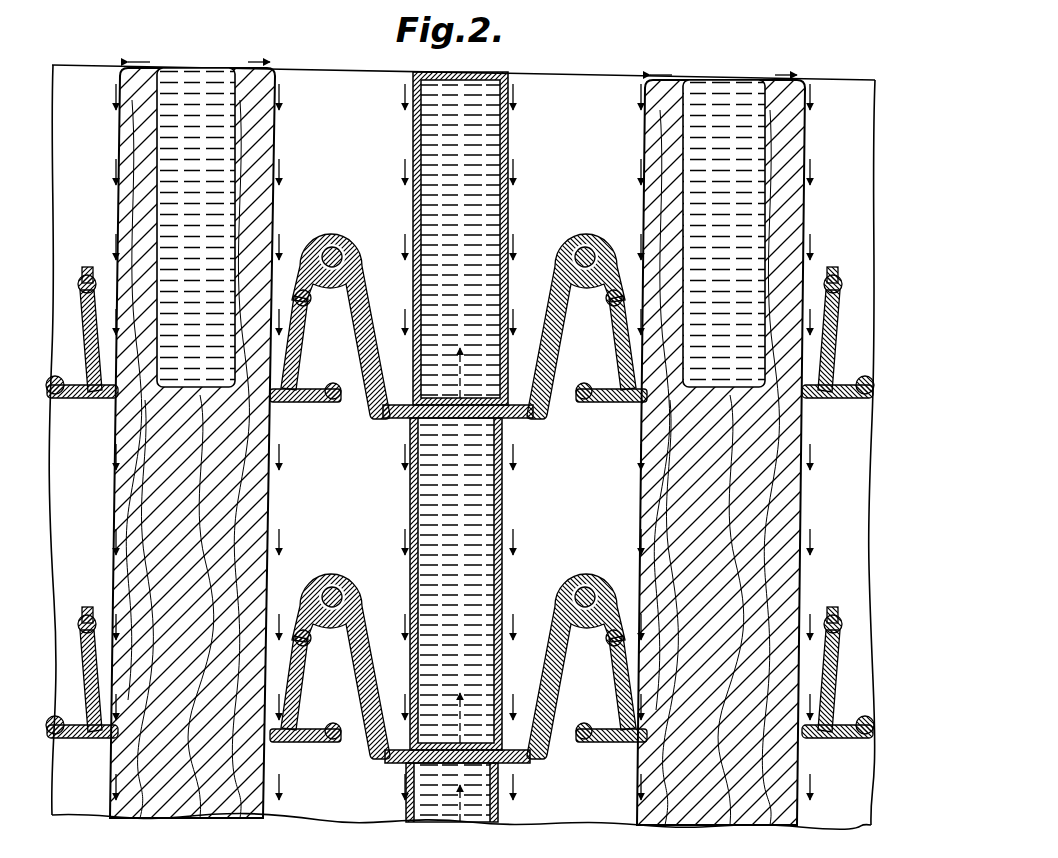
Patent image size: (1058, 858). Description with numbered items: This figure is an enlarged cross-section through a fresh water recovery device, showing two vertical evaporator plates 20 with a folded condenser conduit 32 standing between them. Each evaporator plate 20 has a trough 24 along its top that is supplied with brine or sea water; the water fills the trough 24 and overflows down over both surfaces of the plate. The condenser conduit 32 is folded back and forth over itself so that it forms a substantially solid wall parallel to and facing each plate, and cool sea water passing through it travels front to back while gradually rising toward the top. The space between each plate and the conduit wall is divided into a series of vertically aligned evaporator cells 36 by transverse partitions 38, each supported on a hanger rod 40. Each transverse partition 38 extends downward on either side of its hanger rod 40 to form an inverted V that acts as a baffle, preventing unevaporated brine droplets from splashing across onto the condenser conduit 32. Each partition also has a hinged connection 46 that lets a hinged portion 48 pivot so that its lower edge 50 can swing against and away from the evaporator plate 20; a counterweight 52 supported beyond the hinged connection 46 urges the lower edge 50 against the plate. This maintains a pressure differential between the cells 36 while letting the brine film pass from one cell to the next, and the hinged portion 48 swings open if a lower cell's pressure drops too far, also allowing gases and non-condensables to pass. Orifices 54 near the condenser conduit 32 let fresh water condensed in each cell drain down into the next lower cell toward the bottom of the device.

The evaporator plate 20 is at (113, 192).
The trough 24 is at (192, 72).
The condenser conduit 32 is at (470, 73).
The evaporator cell 36 is at (330, 142).
The transverse partition 38 is at (362, 244).
The hanger rod 40 is at (336, 245).
The hinged connection 46 is at (307, 305).
The hinged portion 48 is at (298, 347).
The lower edge 50 is at (268, 404).
The counterweight 52 is at (335, 385).
The orifice 54 is at (385, 418).